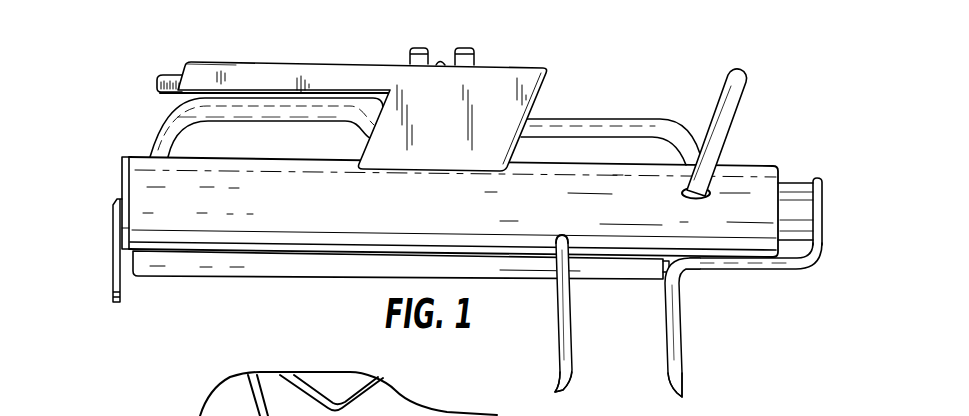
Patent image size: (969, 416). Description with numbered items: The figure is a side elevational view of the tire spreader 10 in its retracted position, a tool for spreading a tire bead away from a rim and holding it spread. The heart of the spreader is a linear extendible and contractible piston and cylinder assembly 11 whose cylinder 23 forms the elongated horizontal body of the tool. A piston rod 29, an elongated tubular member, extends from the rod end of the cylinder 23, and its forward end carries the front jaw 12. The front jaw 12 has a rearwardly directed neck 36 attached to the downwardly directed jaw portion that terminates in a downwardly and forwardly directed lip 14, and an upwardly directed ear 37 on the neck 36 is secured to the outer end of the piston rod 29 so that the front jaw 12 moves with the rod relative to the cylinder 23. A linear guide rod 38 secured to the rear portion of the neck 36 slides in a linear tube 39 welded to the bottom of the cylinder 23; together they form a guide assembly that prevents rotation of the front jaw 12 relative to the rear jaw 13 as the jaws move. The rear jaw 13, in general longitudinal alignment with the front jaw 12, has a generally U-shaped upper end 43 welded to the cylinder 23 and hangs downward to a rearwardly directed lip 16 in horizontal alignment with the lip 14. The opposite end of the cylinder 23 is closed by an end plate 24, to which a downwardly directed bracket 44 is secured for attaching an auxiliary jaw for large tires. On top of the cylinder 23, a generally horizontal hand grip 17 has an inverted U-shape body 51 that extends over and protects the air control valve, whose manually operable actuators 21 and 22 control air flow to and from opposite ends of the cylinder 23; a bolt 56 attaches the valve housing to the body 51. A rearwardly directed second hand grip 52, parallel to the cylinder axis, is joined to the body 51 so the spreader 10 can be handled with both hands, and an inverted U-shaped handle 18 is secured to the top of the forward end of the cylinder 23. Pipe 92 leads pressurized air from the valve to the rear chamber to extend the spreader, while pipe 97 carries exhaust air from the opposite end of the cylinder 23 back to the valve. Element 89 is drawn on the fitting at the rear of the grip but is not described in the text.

The tire spreader 10 is at (579, 42).
The piston and cylinder assembly 11 is at (146, 174).
The front jaw 12 is at (696, 327).
The rear jaw 13 is at (536, 294).
The lip 14 is at (681, 380).
The lip 16 is at (558, 375).
The hand grip 17 is at (357, 89).
The inverted U-shaped handle 18 is at (725, 96).
The actuator 21 is at (416, 48).
The actuator 22 is at (463, 50).
The cylinder 23 is at (190, 210).
The closed end 24 is at (119, 185).
The piston rod 29 is at (793, 196).
The neck 36 is at (779, 266).
The ear 37 is at (825, 196).
The guide rod 38 is at (656, 268).
The tube 39 is at (277, 263).
The U-shaped upper end 43 is at (552, 241).
The bracket 44 is at (112, 283).
The inverted U-shape body 51 is at (525, 90).
The second hand grip 52 is at (227, 72).
The bolt 56 is at (441, 62).
The end fitting 89 is at (166, 77).
The pipe 92 is at (172, 128).
The pipe 97 is at (602, 120).